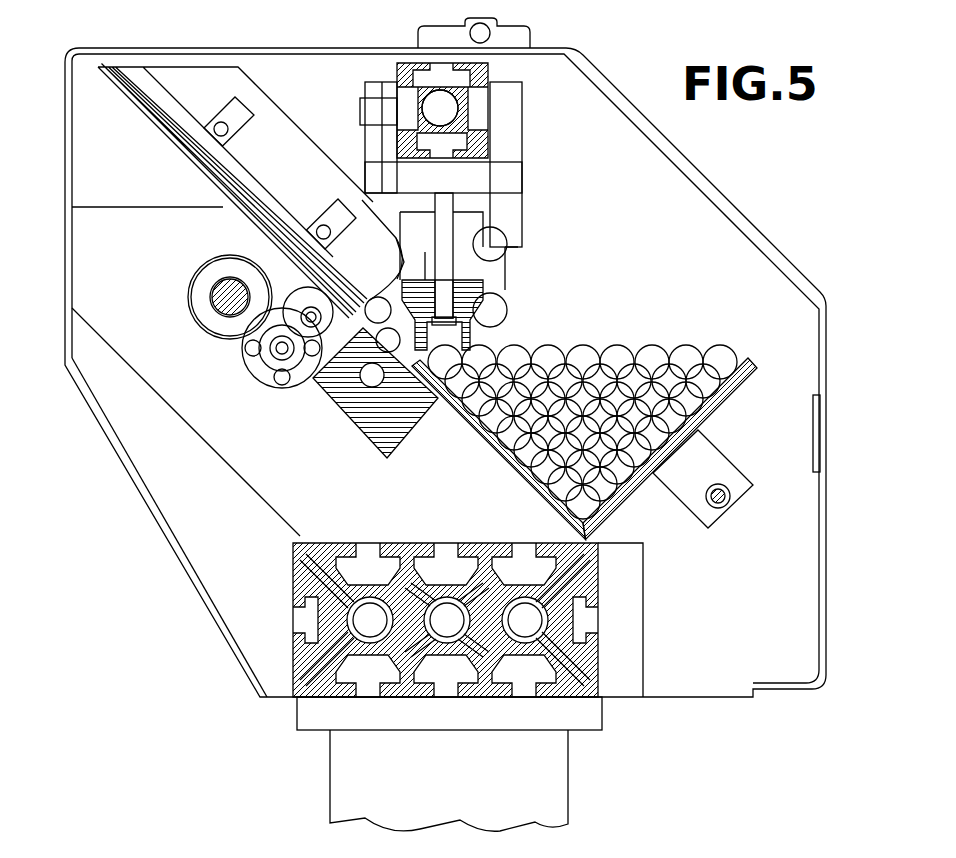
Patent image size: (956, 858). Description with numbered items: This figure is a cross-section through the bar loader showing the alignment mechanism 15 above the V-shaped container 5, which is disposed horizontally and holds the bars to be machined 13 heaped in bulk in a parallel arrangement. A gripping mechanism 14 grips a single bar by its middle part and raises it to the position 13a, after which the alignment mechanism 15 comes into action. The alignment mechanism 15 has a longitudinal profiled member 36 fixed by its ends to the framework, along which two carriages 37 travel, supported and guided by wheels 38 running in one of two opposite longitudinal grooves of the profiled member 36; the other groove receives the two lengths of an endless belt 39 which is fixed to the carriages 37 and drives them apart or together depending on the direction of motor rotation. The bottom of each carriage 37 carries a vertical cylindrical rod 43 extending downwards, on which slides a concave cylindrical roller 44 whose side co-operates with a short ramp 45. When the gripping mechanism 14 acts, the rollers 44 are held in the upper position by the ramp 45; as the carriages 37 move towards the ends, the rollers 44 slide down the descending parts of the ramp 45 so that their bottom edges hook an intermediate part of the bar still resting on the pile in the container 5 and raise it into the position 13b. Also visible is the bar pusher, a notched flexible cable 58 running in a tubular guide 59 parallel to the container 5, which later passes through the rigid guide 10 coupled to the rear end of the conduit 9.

The container 5 is at (722, 408).
The conduit 9 is at (402, 430).
The rigid guide 10 is at (255, 360).
The bars to be machined 13 is at (655, 350).
The middle part of the gripped bar 13a is at (337, 372).
The raised bar position 13b is at (368, 382).
The gripping mechanism 14 is at (258, 80).
The alignment mechanism 15 is at (390, 68).
The longitudinal profiled member 36 is at (488, 72).
The carriages 37 is at (530, 172).
The wheels 38 is at (356, 108).
The endless belt 39 is at (486, 108).
The vertical cylindrical rod 43 is at (446, 232).
The concave cylindrical roller 44 is at (492, 280).
The ramp 45 is at (504, 294).
The flexible cable 58 is at (719, 507).
The tubular guide 59 is at (719, 484).